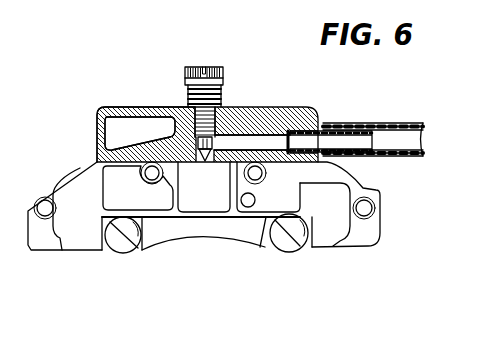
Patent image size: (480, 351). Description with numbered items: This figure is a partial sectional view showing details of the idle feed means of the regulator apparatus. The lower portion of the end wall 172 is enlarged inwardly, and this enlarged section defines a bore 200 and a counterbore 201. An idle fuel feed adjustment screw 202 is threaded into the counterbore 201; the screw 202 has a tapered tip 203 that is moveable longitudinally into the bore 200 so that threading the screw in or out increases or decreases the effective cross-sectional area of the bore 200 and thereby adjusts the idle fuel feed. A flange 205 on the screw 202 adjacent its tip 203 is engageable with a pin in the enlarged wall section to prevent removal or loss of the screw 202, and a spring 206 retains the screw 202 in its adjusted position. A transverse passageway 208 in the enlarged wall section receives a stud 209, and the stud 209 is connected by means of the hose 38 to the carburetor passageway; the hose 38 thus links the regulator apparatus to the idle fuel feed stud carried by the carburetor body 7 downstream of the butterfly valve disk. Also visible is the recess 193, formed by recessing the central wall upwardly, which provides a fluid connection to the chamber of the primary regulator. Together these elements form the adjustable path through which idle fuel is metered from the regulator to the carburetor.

The body 7 is at (263, 148).
The hose 38 is at (370, 156).
The end wall 172 is at (258, 111).
The recess 193 is at (255, 200).
The bore 200 is at (204, 164).
The counterbore 201 is at (160, 107).
The idle fuel feed adjustment screw 202 is at (190, 114).
The tapered tip 203 is at (152, 179).
The flange 205 is at (165, 125).
The spring 206 is at (191, 107).
The transverse passageway 208 is at (242, 143).
The stud 209 is at (333, 125).